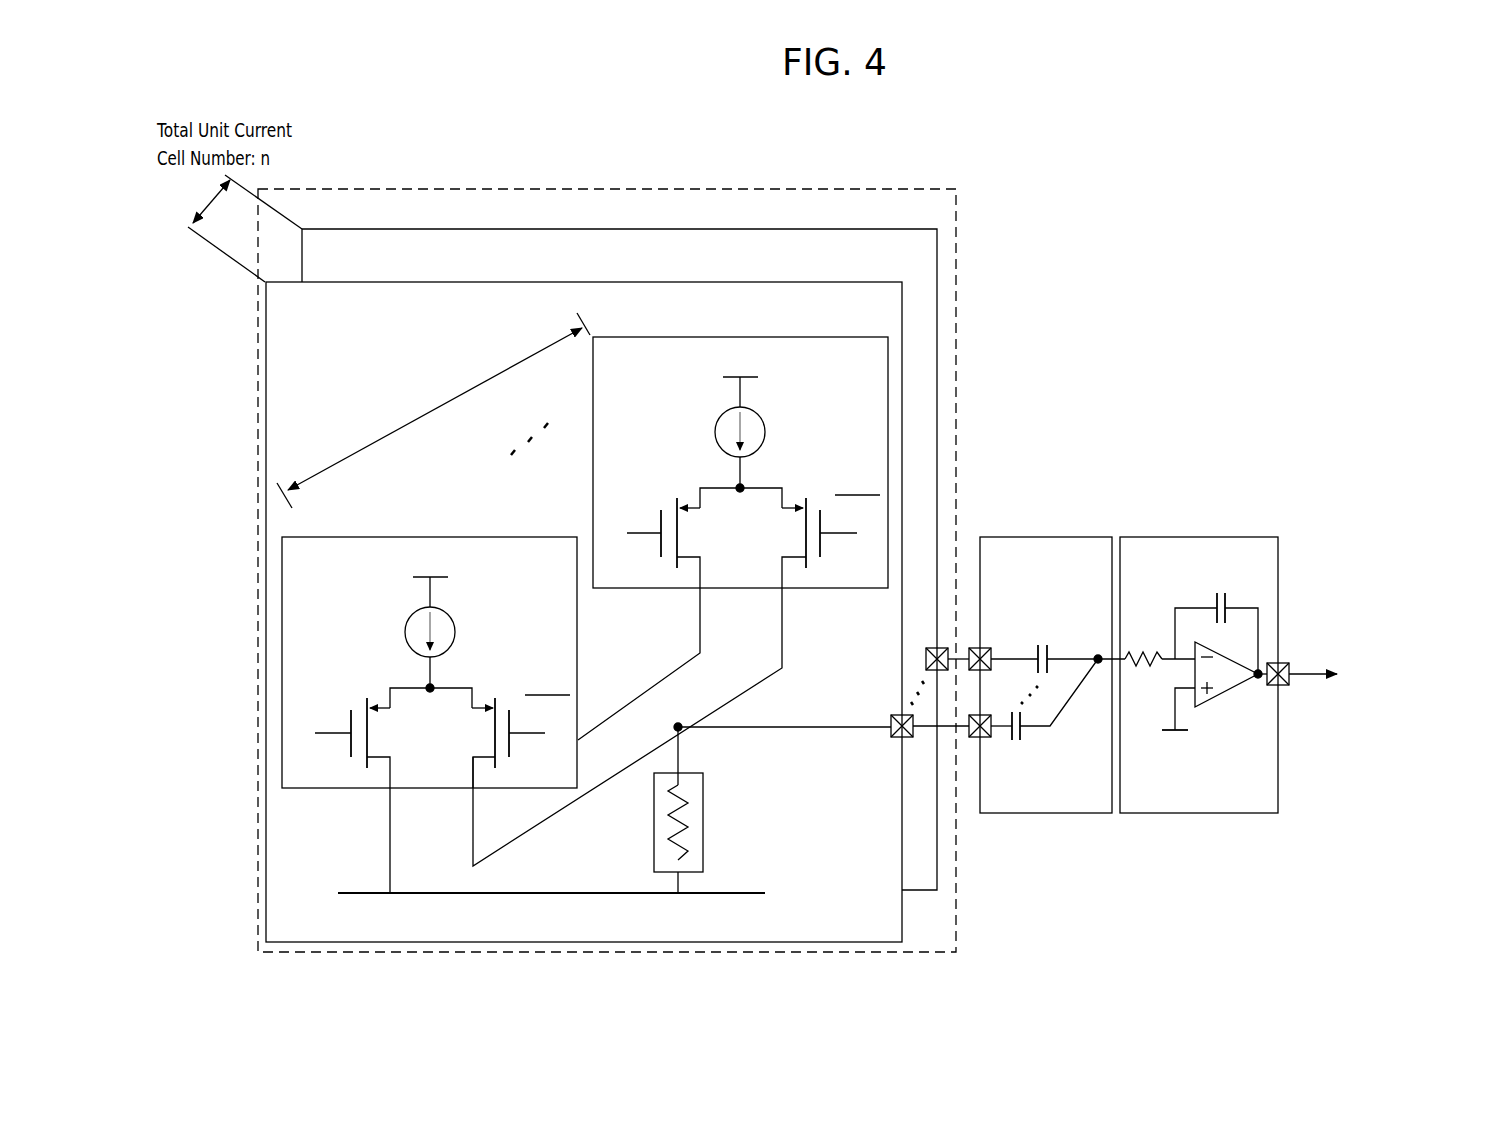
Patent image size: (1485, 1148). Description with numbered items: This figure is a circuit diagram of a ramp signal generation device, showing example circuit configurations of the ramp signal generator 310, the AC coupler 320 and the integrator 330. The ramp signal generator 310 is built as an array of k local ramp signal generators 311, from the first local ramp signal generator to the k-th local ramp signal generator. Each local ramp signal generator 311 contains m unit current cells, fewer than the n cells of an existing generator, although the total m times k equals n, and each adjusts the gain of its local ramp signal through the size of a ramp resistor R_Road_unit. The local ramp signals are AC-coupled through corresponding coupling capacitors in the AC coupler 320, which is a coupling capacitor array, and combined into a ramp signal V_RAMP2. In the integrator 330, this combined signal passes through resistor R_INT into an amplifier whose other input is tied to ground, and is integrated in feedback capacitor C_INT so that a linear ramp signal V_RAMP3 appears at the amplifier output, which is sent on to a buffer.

The ramp signal generator 310 is at (912, 189).
The local ramp signal generator 311 is at (863, 281).
The AC coupler 320 is at (1088, 538).
The integrator 330 is at (1252, 538).